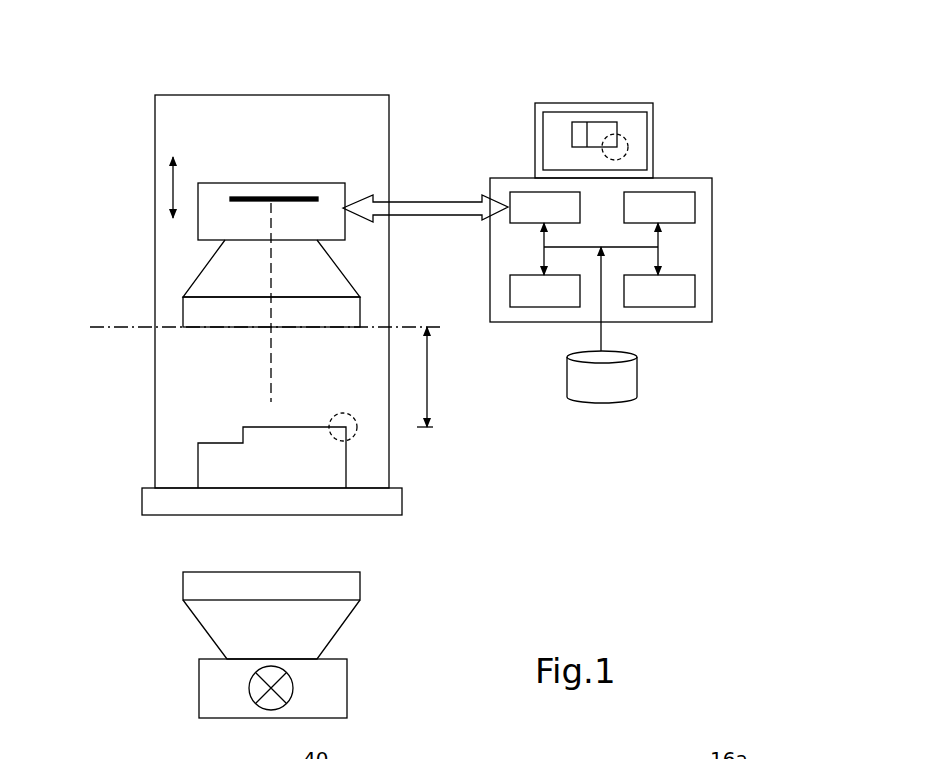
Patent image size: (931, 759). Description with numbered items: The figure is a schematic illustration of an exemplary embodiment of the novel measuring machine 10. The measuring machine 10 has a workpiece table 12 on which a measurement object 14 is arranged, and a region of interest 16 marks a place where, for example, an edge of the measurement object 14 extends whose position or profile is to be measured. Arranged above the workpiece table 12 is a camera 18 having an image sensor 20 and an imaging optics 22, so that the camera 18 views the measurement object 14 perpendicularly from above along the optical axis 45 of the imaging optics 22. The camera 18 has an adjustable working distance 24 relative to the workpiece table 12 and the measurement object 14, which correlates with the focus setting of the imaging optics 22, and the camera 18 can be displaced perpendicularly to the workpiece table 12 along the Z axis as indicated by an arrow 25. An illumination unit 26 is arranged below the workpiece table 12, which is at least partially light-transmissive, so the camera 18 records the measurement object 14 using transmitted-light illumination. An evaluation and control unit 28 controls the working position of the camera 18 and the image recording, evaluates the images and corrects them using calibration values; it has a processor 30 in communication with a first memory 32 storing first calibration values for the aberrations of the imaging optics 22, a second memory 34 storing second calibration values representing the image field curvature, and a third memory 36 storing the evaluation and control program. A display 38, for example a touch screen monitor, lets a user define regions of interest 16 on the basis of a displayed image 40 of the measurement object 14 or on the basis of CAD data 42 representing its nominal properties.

The measuring machine 10 is at (142, 534).
The workpiece table 12 is at (390, 505).
The measurement object 14 is at (198, 463).
The region of interest 16 is at (357, 427).
The camera 18 is at (190, 256).
The image sensor 20 is at (252, 197).
The imaging optics 22 is at (183, 297).
The working distance 24 is at (430, 423).
The arrow 25 is at (170, 192).
The illumination unit 26 is at (343, 688).
The evaluation and control unit 28 is at (667, 322).
The processor 30 is at (497, 178).
The first memory 32 is at (695, 207).
The second memory 34 is at (695, 288).
The third memory 36 is at (542, 307).
The display 38 is at (580, 103).
The displayed image 40 is at (633, 122).
The CAD data 42 is at (627, 397).
The optical axis 45 is at (272, 365).